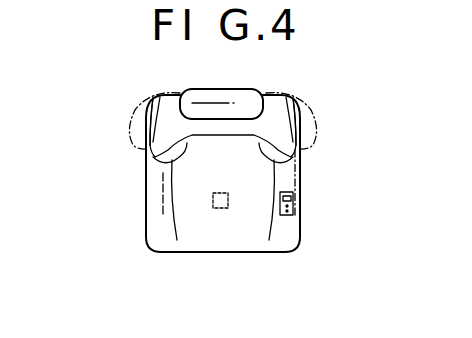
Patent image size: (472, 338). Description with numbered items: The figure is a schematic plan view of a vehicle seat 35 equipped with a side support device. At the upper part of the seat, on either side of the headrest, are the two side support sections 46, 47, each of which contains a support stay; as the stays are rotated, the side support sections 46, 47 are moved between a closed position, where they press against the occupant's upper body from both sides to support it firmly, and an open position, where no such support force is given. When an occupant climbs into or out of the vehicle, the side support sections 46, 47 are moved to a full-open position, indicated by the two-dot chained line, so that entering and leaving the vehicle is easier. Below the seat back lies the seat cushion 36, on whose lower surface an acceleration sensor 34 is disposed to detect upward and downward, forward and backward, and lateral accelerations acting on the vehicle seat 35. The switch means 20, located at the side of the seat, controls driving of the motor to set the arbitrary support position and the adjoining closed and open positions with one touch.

The switch means 20 is at (294, 205).
The acceleration sensor 34 is at (228, 200).
The vehicle seat 35 is at (137, 218).
The seat cushion 36 is at (222, 246).
The side support section 46 is at (298, 167).
The side support section 47 is at (146, 165).